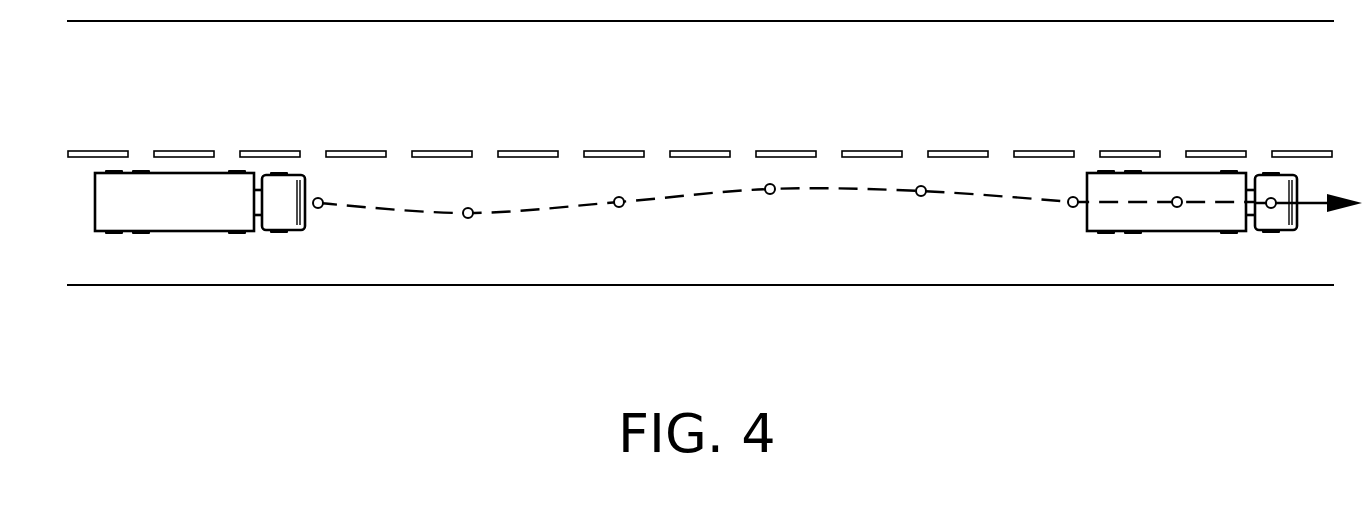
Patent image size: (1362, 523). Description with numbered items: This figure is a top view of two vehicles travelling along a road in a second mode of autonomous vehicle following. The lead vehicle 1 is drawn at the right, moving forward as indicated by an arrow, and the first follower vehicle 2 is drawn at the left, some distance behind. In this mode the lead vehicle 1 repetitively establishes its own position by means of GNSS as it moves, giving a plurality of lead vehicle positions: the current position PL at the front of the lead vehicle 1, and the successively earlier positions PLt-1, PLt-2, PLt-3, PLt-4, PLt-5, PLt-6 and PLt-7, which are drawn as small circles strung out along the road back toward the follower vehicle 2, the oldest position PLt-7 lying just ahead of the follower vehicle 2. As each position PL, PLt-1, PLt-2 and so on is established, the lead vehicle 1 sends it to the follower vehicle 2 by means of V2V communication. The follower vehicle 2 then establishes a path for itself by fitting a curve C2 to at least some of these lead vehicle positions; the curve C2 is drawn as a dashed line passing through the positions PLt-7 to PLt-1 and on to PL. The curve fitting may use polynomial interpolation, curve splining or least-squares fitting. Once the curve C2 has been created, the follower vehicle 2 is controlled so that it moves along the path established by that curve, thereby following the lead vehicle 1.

The lead vehicle 1 is at (1216, 215).
The first follower vehicle 2 is at (192, 200).
The curve C2 is at (681, 200).
The lead vehicle position PL is at (1271, 209).
The lead vehicle position PLt-1 is at (1177, 208).
The lead vehicle position PLt-2 is at (1073, 208).
The lead vehicle position PLt-3 is at (921, 197).
The lead vehicle position PLt-4 is at (770, 195).
The lead vehicle position PLt-5 is at (619, 208).
The lead vehicle position PLt-6 is at (468, 219).
The lead vehicle position PLt-7 is at (318, 209).